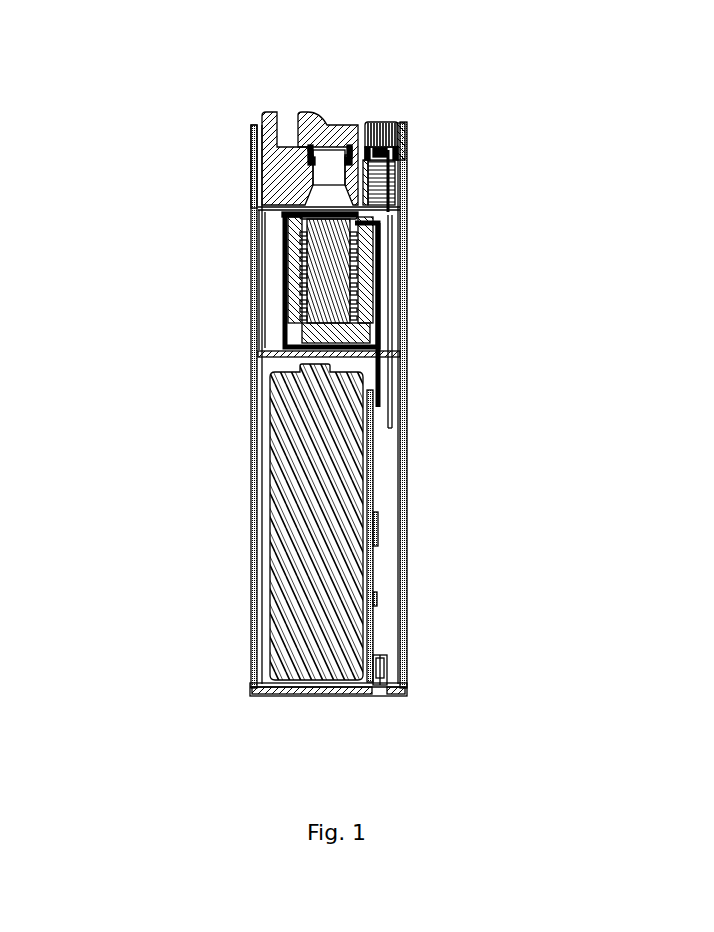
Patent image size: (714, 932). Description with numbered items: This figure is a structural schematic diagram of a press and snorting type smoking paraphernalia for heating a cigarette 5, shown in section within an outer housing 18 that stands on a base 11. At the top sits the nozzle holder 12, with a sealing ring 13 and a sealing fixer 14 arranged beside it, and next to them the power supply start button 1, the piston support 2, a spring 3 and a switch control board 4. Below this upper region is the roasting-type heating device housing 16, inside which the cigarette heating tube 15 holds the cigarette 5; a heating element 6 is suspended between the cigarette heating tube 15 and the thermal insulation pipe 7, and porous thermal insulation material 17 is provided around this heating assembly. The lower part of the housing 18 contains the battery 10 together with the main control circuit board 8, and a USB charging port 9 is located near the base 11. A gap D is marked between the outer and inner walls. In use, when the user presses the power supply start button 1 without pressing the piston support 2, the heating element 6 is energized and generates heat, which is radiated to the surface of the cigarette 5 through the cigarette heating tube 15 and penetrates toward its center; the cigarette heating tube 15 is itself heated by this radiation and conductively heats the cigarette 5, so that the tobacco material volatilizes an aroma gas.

The power supply start button 1 is at (405, 130).
The piston support 2 is at (408, 136).
The spring 3 is at (408, 182).
The switch control board 4 is at (408, 162).
The cigarette 5 is at (325, 248).
The heating element 6 is at (378, 300).
The thermal insulation pipe 7 is at (290, 320).
The main control circuit board 8 is at (375, 535).
The USB charging port 9 is at (382, 670).
The battery 10 is at (315, 525).
The base 11 is at (290, 695).
The nozzle holder 12 is at (325, 123).
The sealing ring 13 is at (253, 128).
The sealing fixer 14 is at (250, 143).
The cigarette heating tube 15 is at (378, 240).
The roasting-type heating device housing 16 is at (258, 290).
The porous thermal insulation material 17 is at (380, 340).
The housing 18 is at (250, 630).
The gap D is at (275, 258).